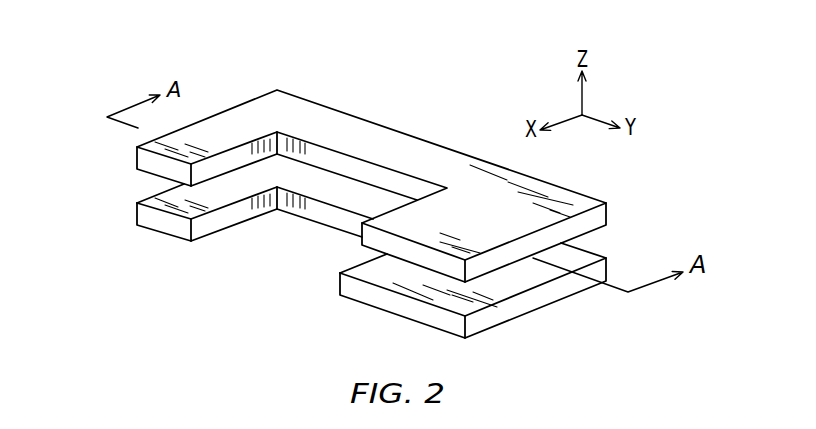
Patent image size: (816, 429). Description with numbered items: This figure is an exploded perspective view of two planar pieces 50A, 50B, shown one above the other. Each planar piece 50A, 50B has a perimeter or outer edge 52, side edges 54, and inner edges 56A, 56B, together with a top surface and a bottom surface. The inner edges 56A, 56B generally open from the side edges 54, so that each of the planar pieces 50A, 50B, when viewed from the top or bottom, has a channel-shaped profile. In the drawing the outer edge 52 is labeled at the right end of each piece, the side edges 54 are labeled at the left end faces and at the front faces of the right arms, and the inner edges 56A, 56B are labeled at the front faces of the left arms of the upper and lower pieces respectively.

The planar piece 50A is at (387, 125).
The planar piece 50B is at (535, 309).
The outer edge 52 is at (590, 197).
The side edges 54 is at (167, 170).
The inner edge 56A is at (230, 160).
The inner edge 56B is at (205, 227).